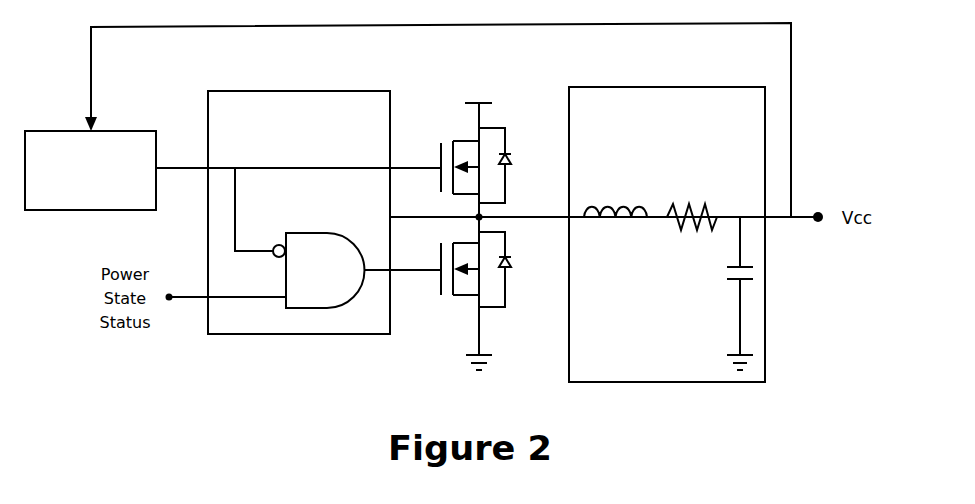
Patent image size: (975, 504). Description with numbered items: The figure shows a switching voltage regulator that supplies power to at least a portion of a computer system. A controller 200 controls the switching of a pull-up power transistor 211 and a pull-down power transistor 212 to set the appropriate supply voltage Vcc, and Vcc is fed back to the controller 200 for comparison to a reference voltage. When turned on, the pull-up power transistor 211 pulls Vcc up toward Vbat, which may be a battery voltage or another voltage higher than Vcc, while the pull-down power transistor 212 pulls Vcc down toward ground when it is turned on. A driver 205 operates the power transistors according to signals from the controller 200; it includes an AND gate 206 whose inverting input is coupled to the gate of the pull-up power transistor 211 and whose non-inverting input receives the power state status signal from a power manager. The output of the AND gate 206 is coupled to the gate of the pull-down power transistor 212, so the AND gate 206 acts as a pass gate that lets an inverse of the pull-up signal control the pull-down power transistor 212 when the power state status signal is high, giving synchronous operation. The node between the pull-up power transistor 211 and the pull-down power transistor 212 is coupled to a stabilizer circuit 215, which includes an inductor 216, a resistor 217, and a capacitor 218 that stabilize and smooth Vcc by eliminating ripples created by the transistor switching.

The controller 200 is at (75, 187).
The driver 205 is at (347, 122).
The AND gate 206 is at (305, 280).
The pull-up power transistor 211 is at (446, 120).
The pull-down power transistor 212 is at (462, 322).
The stabilizer circuit 215 is at (733, 120).
The inductor 216 is at (615, 224).
The resistor 217 is at (692, 207).
The capacitor 218 is at (722, 293).